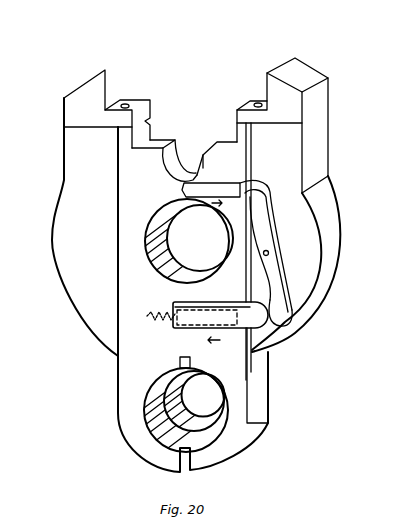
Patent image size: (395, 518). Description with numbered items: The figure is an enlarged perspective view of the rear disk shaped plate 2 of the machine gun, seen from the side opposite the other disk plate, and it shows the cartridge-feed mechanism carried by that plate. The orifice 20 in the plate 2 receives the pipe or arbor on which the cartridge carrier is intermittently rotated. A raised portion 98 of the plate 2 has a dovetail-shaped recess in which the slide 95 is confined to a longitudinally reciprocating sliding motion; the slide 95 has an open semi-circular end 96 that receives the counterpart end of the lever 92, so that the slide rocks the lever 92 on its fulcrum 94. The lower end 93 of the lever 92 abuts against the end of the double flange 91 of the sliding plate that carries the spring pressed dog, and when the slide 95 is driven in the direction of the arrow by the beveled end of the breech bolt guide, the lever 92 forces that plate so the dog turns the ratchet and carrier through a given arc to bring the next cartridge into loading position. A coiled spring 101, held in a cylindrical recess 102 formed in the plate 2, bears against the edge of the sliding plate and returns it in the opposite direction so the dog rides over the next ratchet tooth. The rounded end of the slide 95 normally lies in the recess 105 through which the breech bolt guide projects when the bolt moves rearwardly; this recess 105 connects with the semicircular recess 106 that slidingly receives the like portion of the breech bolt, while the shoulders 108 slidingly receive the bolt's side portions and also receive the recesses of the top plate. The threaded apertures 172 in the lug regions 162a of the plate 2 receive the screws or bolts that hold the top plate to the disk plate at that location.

The disk shaped plate 2 is at (64, 249).
The orifice 20 is at (153, 258).
The double flange 91 is at (221, 304).
The lever 92 is at (272, 218).
The lower end of lever 93 is at (275, 313).
The fulcrum 94 is at (269, 252).
The slide 95 is at (217, 189).
The open semi-circular end 96 is at (235, 198).
The raised portion 98 is at (137, 201).
The coiled spring 101 is at (160, 308).
The cylindrical recess 102 is at (157, 326).
The recess 105 is at (205, 170).
The semicircular recess 106 is at (182, 153).
The shoulders 108 is at (165, 139).
The mounting lug 162a is at (123, 98).
The threaded apertures 172 is at (126, 103).